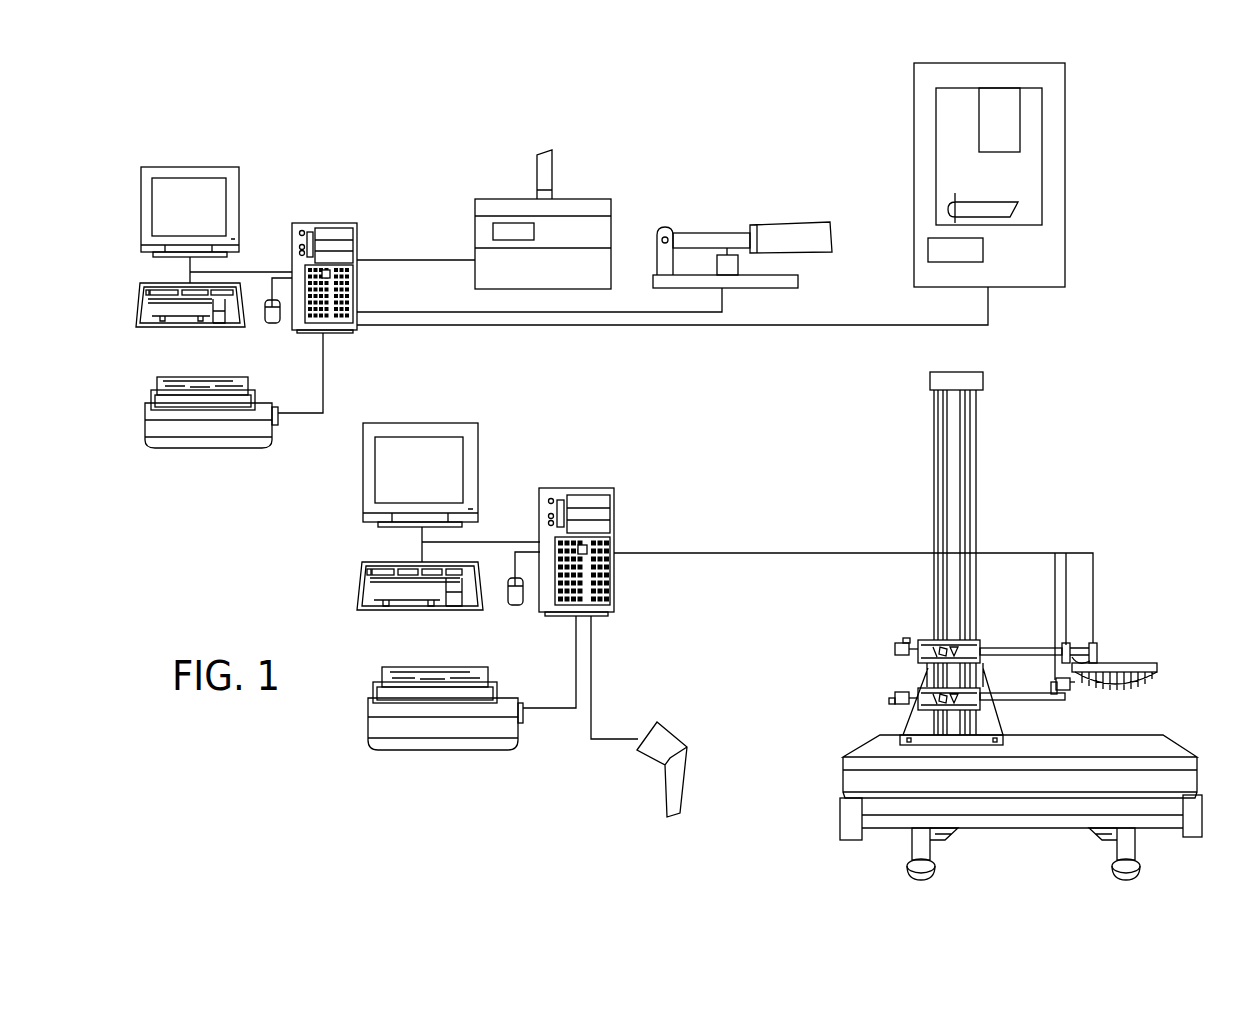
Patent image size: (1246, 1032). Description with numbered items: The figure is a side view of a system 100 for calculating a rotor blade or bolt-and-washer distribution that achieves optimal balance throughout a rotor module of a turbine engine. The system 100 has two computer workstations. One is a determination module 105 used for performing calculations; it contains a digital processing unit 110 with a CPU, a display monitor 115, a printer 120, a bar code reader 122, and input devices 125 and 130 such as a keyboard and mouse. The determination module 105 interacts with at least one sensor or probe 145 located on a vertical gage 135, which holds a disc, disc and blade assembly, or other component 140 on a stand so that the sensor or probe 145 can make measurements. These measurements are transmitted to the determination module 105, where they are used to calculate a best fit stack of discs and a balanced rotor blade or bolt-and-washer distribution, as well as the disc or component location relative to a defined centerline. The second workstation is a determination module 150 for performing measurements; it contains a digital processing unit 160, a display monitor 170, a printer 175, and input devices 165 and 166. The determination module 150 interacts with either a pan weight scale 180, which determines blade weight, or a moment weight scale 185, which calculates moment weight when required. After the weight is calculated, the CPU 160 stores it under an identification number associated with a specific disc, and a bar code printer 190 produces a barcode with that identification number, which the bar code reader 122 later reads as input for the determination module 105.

The system 100 is at (1196, 88).
The determination module 105 is at (519, 417).
The digital processing unit 110 is at (587, 488).
The display monitor 115 is at (423, 423).
The printer 120 is at (448, 742).
The bar code reader 122 is at (670, 730).
The input device 125 is at (418, 612).
The input device 130 is at (515, 605).
The vertical gage 135 is at (1028, 827).
The component 140 is at (1140, 665).
The sensor or probe 145 is at (1080, 652).
The determination module 150 is at (284, 167).
The digital processing unit 160 is at (333, 222).
The input device 165 is at (187, 327).
The input device 166 is at (272, 323).
The display monitor 170 is at (190, 165).
The printer 175 is at (212, 450).
The pan weight scale 180 is at (495, 197).
The moment weight scale 185 is at (702, 232).
The bar code printer 190 is at (1065, 157).